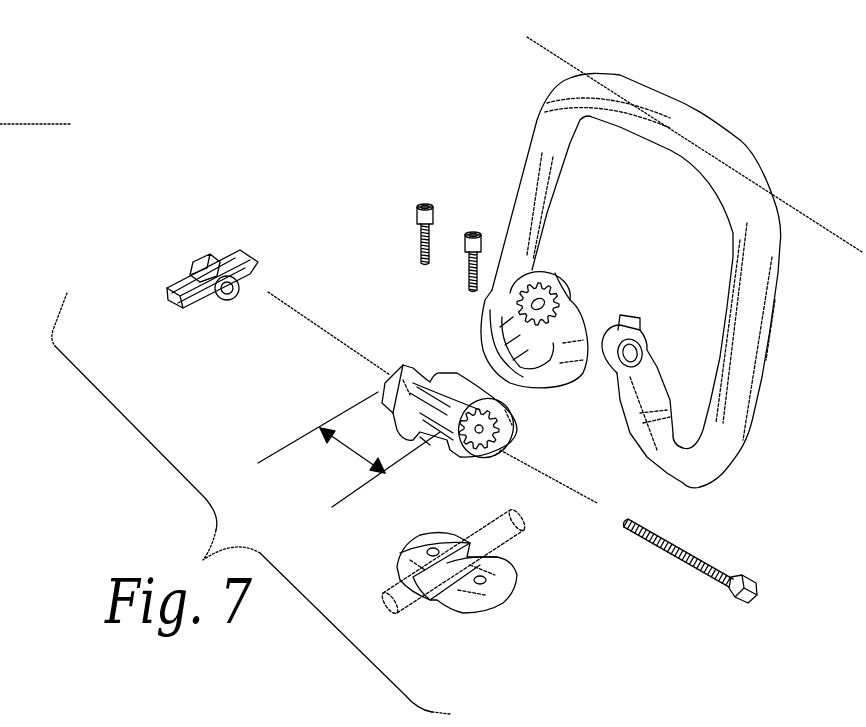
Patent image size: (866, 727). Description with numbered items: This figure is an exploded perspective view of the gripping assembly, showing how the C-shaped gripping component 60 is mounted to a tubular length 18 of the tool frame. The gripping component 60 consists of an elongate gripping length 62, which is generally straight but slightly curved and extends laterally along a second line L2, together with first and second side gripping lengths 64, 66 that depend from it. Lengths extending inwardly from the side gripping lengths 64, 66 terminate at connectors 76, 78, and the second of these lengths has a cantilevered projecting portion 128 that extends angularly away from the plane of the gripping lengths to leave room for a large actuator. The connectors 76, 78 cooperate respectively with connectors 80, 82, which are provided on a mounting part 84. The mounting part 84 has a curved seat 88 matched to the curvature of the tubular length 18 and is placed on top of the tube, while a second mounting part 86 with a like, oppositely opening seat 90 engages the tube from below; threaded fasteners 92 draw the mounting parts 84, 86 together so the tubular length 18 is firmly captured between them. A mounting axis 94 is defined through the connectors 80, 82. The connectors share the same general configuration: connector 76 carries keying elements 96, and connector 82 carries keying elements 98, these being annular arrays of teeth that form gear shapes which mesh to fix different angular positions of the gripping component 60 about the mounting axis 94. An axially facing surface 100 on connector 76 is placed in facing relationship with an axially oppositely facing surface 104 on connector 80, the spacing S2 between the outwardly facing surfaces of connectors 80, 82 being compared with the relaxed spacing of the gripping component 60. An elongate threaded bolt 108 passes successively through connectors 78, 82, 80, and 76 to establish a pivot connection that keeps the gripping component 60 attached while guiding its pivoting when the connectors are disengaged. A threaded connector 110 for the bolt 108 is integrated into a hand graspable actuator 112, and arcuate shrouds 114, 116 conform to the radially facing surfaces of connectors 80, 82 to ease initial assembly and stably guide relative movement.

The tubular length 18 is at (505, 550).
The gripping component 60 is at (414, 254).
The elongate gripping length 62 is at (391, 280).
The first side gripping length 64 is at (525, 155).
The second side gripping length 66 is at (753, 330).
The connector 76 is at (558, 273).
The connector 78 is at (640, 325).
The connector 80 is at (438, 379).
The connector 82 is at (505, 412).
The mounting part 84 is at (455, 372).
The mounting part 86 is at (505, 600).
The curved seat 88 is at (432, 442).
The curved seat 90 is at (447, 547).
The threaded fasteners 92 is at (468, 256).
The mounting axis 94 is at (47, 126).
The keying elements 96 is at (547, 219).
The keying elements 98 is at (500, 453).
The axially facing surface 100 is at (512, 440).
The axially oppositely facing surface 104 is at (412, 365).
The elongate threaded bolt 108 is at (712, 565).
The threaded connector 110 is at (240, 293).
The hand graspable actuator 112 is at (198, 260).
The arcuate shroud 114 is at (562, 290).
The arcuate shroud 116 is at (623, 317).
The cantilevered projecting portion 128 is at (647, 387).
The second line L2 is at (810, 200).
The spacing S2 is at (349, 449).